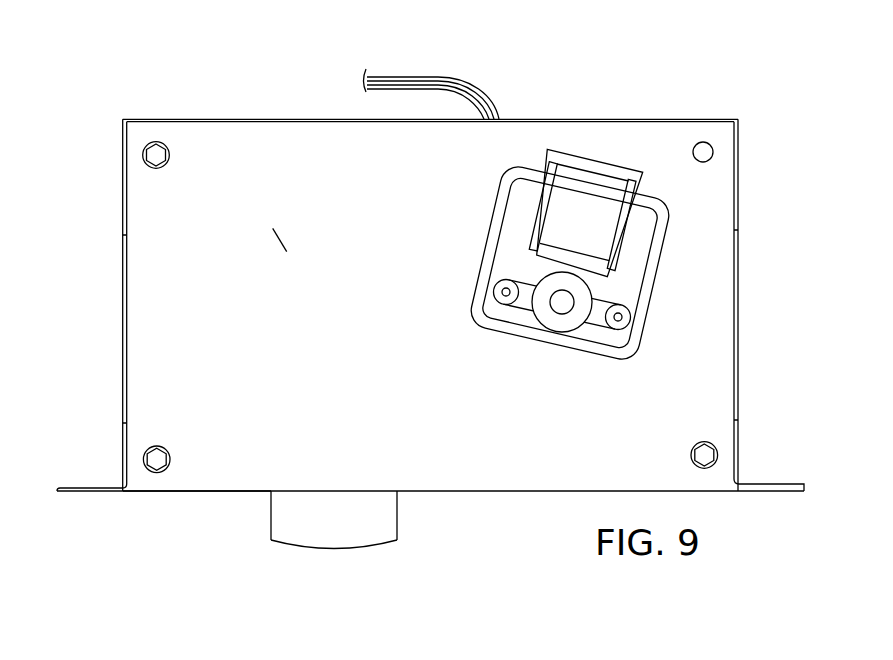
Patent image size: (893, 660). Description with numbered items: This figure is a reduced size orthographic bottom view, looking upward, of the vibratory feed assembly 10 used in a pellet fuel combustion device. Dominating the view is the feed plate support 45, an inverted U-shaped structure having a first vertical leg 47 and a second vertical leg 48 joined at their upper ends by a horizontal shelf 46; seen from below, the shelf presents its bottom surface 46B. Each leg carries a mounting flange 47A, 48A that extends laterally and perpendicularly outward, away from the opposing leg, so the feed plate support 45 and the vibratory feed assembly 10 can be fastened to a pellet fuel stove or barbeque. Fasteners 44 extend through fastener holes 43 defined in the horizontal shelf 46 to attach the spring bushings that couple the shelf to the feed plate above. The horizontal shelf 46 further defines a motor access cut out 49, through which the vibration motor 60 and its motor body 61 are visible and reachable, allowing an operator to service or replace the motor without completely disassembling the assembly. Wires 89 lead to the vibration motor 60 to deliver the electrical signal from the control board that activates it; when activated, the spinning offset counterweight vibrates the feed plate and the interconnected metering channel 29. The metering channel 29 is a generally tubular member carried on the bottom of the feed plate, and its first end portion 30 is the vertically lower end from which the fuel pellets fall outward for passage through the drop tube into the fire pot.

The vibratory feed assembly 10 is at (499, 509).
The metering channel 29 is at (308, 515).
The first end portion 30 is at (368, 547).
The fastener holes 43 is at (702, 142).
The fasteners 44 is at (148, 160).
The feed plate support 45 is at (205, 507).
The horizontal shelf 46 is at (572, 488).
The bottom surface 46B is at (278, 245).
The first vertical leg 47 is at (125, 258).
The mounting flange 47A is at (58, 490).
The second vertical leg 48 is at (737, 277).
The mounting flange 48A is at (788, 485).
The motor access cut out 49 is at (591, 169).
The vibration motor 60 is at (561, 356).
The motor body 61 is at (513, 248).
The wires 89 is at (397, 78).